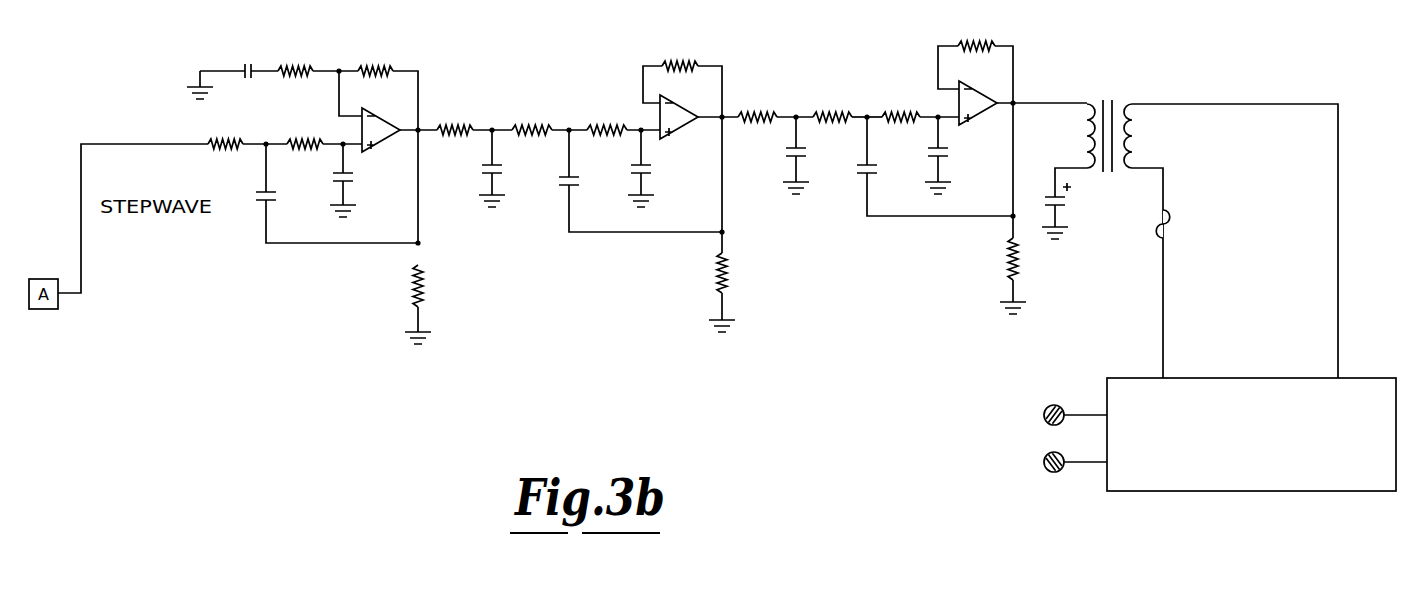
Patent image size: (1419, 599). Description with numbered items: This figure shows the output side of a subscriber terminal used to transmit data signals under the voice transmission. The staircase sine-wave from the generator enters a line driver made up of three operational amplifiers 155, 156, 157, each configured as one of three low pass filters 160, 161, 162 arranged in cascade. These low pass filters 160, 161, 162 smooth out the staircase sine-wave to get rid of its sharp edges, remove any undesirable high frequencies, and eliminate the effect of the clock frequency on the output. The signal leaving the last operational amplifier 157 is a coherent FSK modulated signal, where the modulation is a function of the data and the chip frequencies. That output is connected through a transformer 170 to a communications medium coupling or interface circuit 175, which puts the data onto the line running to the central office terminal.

The operational amplifier 155 is at (386, 123).
The operational amplifier 156 is at (683, 111).
The operational amplifier 157 is at (986, 95).
The low pass filter 160 is at (312, 247).
The low pass filter 161 is at (602, 237).
The low pass filter 162 is at (910, 222).
The transformer 170 is at (1163, 133).
The communications medium coupling circuit 175 is at (1210, 380).